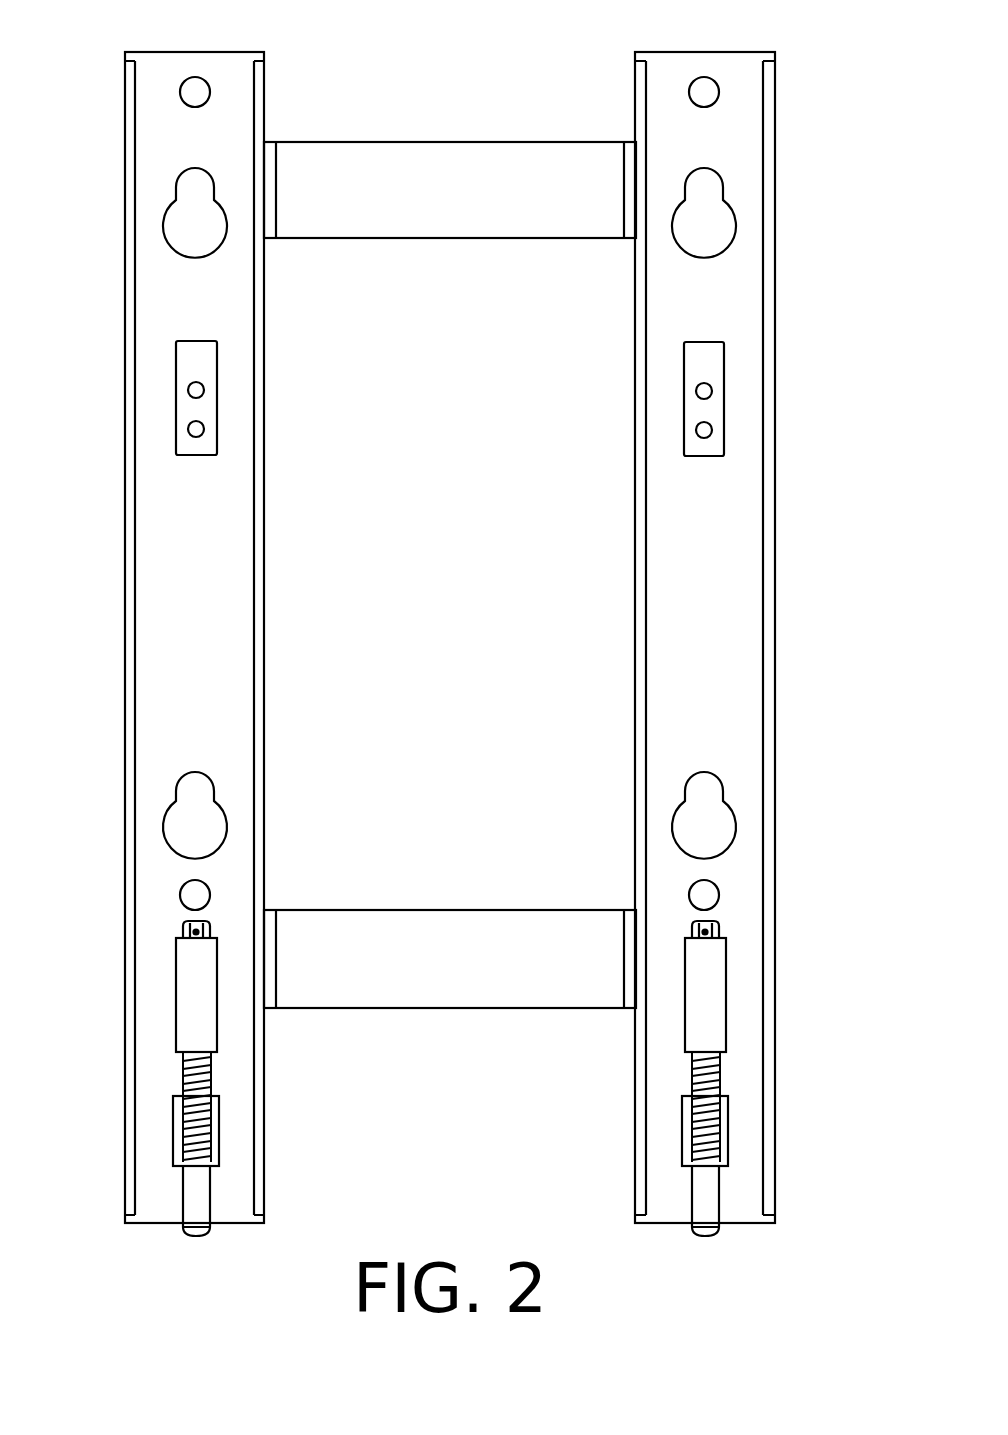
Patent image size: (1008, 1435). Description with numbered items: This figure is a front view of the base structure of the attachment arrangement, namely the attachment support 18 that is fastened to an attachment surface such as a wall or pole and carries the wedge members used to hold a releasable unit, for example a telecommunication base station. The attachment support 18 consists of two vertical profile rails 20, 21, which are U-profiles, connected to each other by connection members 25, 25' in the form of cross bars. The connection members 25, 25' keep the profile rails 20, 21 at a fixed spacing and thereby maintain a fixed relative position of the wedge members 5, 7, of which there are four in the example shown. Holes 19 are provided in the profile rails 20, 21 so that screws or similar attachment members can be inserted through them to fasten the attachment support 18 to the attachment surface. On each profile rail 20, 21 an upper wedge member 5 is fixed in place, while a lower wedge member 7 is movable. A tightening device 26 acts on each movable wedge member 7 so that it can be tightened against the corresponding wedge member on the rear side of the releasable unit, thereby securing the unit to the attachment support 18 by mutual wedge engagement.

The wedge member 5 is at (186, 370).
The movable wedge member 7 is at (185, 966).
The attachment support 18 is at (479, 644).
The holes 19 is at (180, 238).
The profile rail 20 is at (124, 745).
The profile rail 21 is at (776, 600).
The connection member 25 is at (450, 160).
The connection member 25' is at (450, 921).
The tightening device 26 is at (722, 1073).